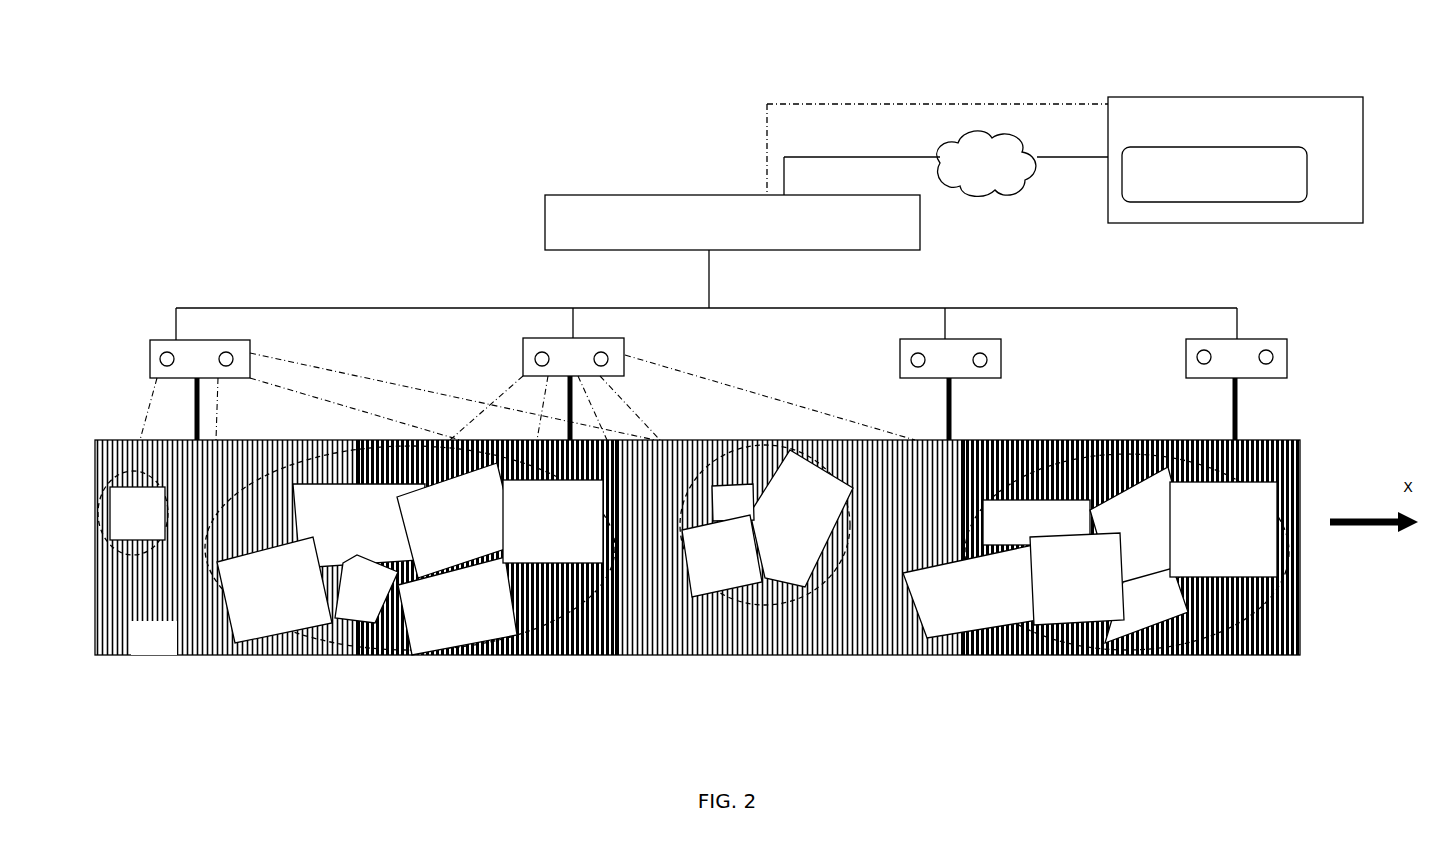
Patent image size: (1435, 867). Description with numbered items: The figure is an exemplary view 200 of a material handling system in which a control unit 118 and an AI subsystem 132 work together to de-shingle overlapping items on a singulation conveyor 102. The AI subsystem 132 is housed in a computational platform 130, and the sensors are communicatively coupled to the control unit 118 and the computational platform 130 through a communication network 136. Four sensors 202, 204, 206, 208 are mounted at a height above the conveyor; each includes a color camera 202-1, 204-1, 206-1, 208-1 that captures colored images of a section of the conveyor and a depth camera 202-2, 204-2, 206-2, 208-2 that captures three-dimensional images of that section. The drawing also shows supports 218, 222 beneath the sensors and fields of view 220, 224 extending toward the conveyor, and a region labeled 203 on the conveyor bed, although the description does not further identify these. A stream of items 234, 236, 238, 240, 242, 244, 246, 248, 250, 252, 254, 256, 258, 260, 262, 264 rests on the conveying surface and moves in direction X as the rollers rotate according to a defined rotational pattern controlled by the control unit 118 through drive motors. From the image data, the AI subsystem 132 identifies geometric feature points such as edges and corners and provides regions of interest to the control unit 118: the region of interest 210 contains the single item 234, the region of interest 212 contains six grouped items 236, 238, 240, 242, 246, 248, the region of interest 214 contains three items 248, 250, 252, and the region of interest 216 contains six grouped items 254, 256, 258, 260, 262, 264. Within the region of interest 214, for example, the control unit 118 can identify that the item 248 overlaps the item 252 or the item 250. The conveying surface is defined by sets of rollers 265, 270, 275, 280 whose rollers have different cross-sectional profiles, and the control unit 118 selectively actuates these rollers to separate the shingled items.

The exemplary view 200 is at (207, 183).
The singulation conveyor 102 is at (165, 663).
The control unit 118 is at (732, 222).
The computational platform 130 is at (1235, 160).
The AI subsystem 132 is at (1214, 174).
The communication network 136 is at (937, 141).
The sensor 202 is at (211, 318).
The color camera 202-1 is at (165, 353).
The depth camera 202-2 is at (231, 355).
The sensor 204 is at (566, 318).
The color camera 204-1 is at (537, 357).
The depth camera 204-2 is at (608, 353).
The sensor 206 is at (954, 319).
The color camera 206-1 is at (913, 357).
The depth camera 206-2 is at (987, 357).
The sensor 208 is at (1223, 315).
The color camera 208-1 is at (1202, 350).
The depth camera 208-2 is at (1258, 339).
The region of interest 210 is at (112, 460).
The region of interest 212 is at (548, 655).
The region of interest 214 is at (760, 592).
The region of interest 216 is at (1300, 650).
The first mounting post 218 is at (180, 409).
The field of view of first imaging device 220 is at (452, 396).
The second mounting post 222 is at (547, 408).
The field of view of second imaging device 224 is at (770, 397).
The conveyor surface 203 is at (154, 638).
The item 234 is at (137, 513).
The item 236 is at (274, 590).
The item 238 is at (359, 526).
The item 240 is at (457, 520).
The item 242 is at (366, 589).
The item 244 is at (457, 606).
The item 246 is at (553, 521).
The item 248 is at (722, 556).
The item 250 is at (733, 502).
The item 252 is at (801, 518).
The item 254 is at (970, 591).
The item 256 is at (1036, 522).
The item 258 is at (1077, 579).
The item 260 is at (1142, 536).
The item 262 is at (1146, 605).
The item 264 is at (1223, 529).
The set of rollers 265 is at (105, 655).
The set of rollers 270 is at (612, 655).
The set of rollers 275 is at (882, 655).
The set of rollers 280 is at (1236, 655).